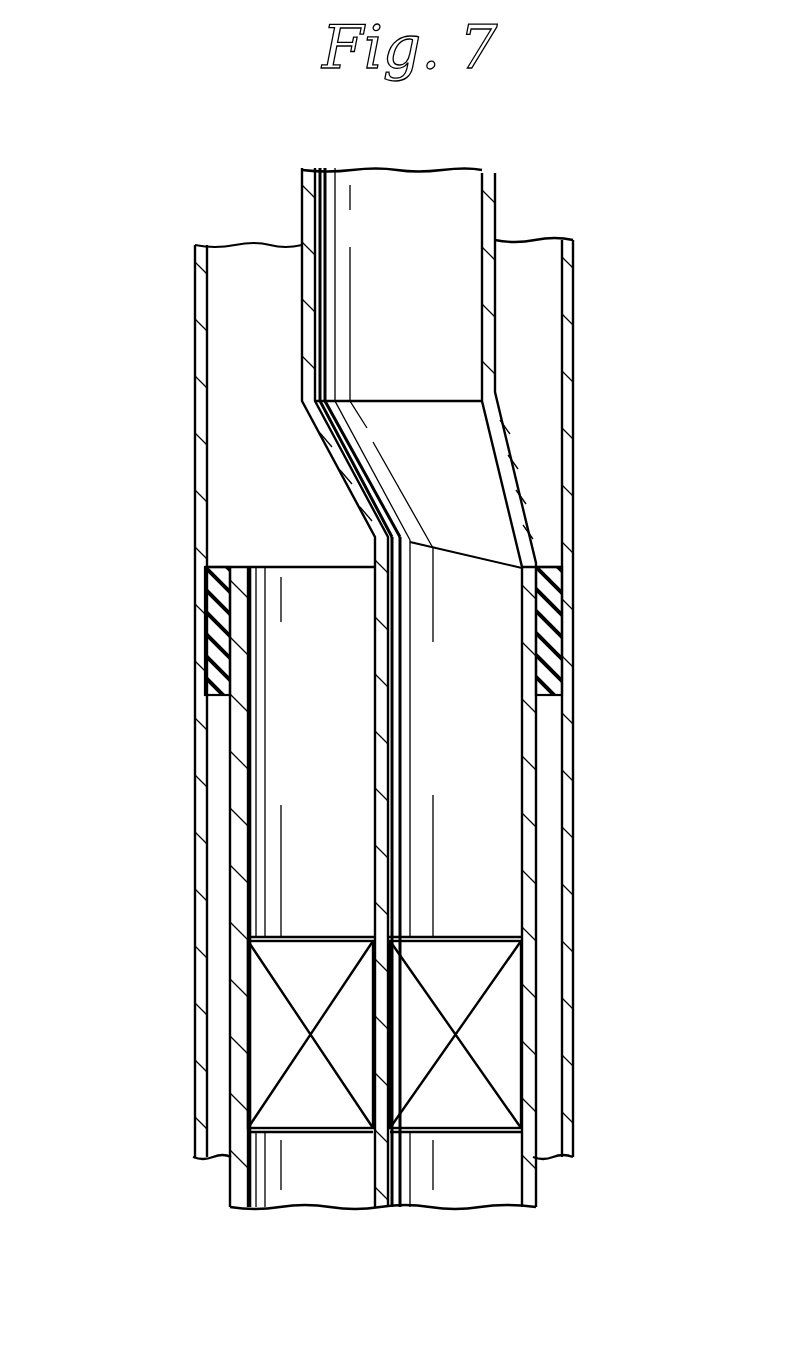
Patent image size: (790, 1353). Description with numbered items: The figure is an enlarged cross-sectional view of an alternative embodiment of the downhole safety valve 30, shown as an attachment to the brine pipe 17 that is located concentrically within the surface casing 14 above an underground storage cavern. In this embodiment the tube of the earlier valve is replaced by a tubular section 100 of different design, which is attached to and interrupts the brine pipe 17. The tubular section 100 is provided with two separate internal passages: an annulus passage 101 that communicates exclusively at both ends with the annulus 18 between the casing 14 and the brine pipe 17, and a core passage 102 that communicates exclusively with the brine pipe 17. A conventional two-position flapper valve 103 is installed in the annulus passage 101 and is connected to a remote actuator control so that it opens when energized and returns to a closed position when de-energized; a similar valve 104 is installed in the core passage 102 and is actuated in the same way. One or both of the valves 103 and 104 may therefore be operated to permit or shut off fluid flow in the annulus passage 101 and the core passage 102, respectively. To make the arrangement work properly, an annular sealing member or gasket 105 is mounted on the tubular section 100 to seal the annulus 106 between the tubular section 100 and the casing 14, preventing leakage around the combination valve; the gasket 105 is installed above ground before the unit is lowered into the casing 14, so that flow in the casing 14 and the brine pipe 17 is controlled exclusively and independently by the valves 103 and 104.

The surface casing 14 is at (195, 300).
The brine pipe 17 is at (498, 182).
The annulus 18 is at (258, 255).
The downhole safety valve 30 is at (247, 546).
The tubular section 100 is at (232, 870).
The annulus passage 101 is at (330, 710).
The core passage 102 is at (475, 710).
The flapper valve 103 is at (315, 1110).
The valve 104 is at (463, 1112).
The gasket 105 is at (207, 618).
The annulus 106 is at (215, 768).